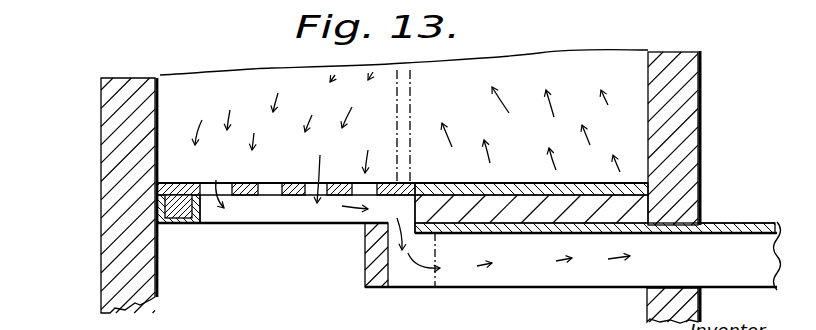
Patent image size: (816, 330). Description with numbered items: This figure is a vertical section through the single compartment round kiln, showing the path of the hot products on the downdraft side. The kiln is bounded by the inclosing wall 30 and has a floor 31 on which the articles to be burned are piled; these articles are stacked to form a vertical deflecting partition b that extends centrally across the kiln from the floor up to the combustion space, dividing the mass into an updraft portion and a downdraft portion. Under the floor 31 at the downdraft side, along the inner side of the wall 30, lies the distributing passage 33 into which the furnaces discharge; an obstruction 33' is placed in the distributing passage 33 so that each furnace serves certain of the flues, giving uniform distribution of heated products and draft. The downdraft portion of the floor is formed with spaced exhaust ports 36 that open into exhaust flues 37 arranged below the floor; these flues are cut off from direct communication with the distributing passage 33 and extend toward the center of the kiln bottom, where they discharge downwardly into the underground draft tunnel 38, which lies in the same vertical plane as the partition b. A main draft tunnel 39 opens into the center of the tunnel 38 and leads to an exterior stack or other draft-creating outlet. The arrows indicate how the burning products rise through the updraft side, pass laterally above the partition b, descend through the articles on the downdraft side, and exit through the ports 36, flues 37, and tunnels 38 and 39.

The inclosing wall 30 is at (120, 185).
The floor 31 is at (505, 195).
The distributing passage 33 is at (179, 239).
The obstruction 33' is at (186, 254).
The exhaust ports 36 is at (312, 183).
The exhaust flues 37 is at (313, 217).
The draft tunnel 38 is at (397, 280).
The main draft tunnel 39 is at (490, 275).
The deflecting partition b is at (412, 113).